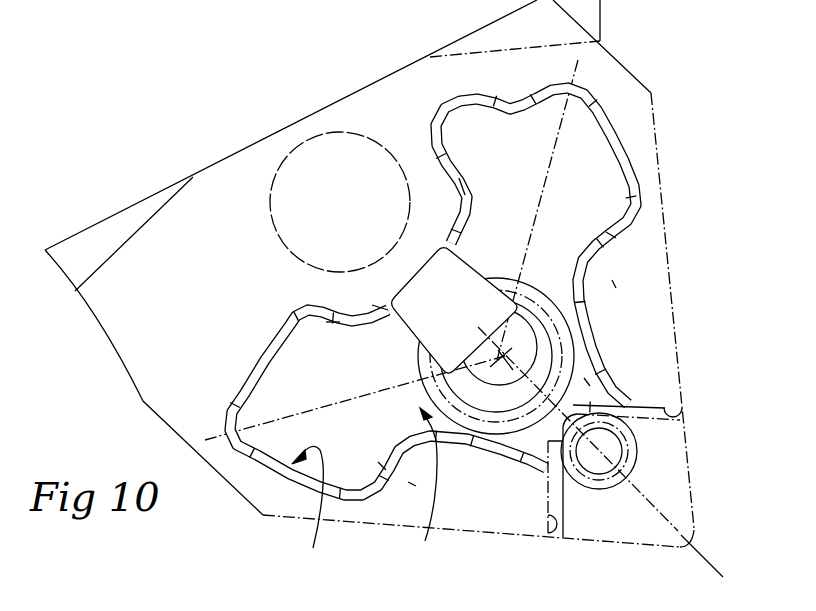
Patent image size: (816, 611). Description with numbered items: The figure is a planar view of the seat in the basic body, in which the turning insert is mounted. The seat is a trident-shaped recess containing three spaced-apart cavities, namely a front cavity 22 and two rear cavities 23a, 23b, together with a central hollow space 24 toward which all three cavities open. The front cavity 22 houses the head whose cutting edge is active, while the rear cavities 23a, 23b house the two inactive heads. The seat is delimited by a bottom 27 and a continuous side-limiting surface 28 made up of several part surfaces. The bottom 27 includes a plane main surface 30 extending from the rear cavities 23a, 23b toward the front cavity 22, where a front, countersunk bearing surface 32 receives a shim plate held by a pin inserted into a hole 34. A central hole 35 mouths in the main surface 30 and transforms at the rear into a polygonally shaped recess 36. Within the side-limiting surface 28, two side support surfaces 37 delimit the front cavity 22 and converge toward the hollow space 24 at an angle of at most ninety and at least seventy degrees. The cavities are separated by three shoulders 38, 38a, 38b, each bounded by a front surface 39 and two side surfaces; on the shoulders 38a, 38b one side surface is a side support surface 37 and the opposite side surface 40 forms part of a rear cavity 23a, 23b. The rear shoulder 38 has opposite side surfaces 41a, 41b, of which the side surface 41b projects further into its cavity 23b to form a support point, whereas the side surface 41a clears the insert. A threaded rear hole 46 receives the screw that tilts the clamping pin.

The front cavity 22 is at (622, 509).
The rear cavity 23a is at (277, 377).
The rear cavity 23b is at (589, 147).
The central hollow space 24 is at (586, 378).
The bottom 27 is at (426, 485).
The side-limiting surface 28 is at (309, 509).
The main surface 30 is at (397, 425).
The bearing surface 32 is at (607, 528).
The hole 34 is at (607, 455).
The central hole 35 is at (535, 342).
The polygonally shaped recess 36 is at (474, 305).
The side support surface 37 is at (683, 414).
The rear shoulder 38 is at (362, 297).
The shoulder 38a is at (413, 483).
The shoulder 38b is at (617, 283).
The front surface 39 is at (418, 277).
The side surface 40 is at (618, 233).
The side surface 41a is at (331, 323).
The side surface 41b is at (461, 186).
The rear hole 46 is at (297, 176).